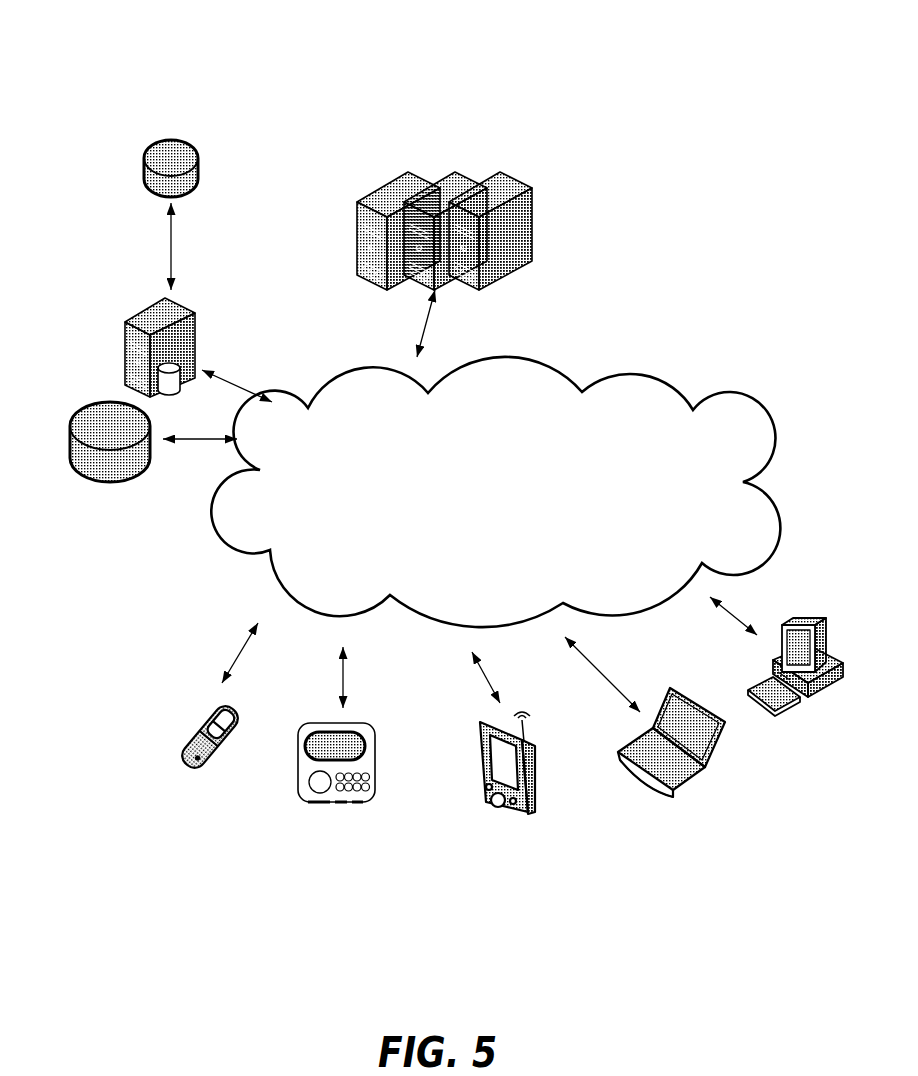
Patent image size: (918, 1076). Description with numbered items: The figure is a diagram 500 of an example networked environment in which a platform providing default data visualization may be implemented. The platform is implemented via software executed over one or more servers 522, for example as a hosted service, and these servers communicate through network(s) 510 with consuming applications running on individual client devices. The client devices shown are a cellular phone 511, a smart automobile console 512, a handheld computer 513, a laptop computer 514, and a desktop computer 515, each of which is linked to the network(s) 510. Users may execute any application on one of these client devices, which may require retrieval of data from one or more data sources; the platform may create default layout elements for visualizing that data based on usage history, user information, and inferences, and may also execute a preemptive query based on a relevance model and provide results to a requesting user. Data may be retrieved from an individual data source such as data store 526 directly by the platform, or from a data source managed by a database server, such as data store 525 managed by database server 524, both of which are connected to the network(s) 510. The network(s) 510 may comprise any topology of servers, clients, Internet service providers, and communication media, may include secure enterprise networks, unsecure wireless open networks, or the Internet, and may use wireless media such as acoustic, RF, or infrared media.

The diagram 500 is at (677, 59).
The network(s) 510 is at (366, 355).
The cellular phone 511 is at (185, 784).
The smart automobile console 512 is at (338, 825).
The handheld computer 513 is at (516, 832).
The laptop computer 514 is at (698, 805).
The desktop computer 515 is at (833, 711).
The servers 522 is at (366, 171).
The database server 524 is at (159, 287).
The data store 525 is at (167, 136).
The data store 526 is at (119, 394).